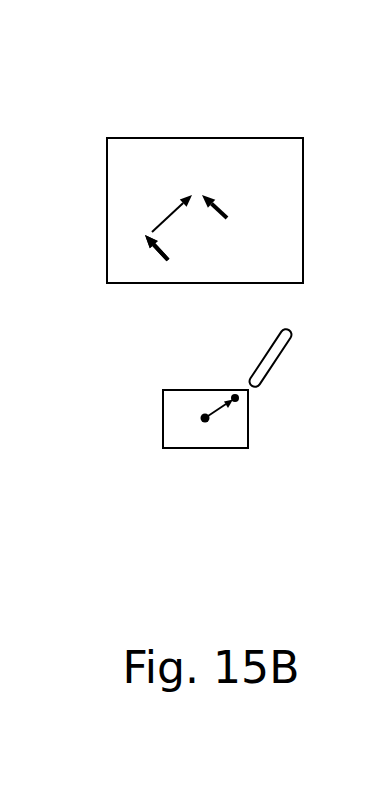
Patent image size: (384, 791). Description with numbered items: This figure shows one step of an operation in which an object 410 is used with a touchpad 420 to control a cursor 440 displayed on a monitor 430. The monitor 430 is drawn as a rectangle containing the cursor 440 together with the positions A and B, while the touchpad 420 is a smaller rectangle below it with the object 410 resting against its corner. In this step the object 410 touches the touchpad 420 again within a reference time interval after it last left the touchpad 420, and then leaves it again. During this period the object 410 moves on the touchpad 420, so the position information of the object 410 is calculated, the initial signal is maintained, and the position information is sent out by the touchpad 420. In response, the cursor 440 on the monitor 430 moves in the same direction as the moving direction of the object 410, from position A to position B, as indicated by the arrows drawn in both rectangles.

The monitor 430 is at (202, 138).
The cursor 440 is at (160, 252).
The object 410 is at (293, 326).
The touchpad 420 is at (163, 420).